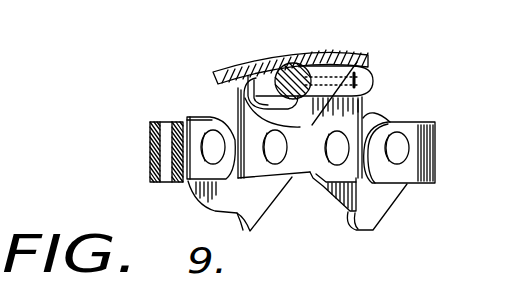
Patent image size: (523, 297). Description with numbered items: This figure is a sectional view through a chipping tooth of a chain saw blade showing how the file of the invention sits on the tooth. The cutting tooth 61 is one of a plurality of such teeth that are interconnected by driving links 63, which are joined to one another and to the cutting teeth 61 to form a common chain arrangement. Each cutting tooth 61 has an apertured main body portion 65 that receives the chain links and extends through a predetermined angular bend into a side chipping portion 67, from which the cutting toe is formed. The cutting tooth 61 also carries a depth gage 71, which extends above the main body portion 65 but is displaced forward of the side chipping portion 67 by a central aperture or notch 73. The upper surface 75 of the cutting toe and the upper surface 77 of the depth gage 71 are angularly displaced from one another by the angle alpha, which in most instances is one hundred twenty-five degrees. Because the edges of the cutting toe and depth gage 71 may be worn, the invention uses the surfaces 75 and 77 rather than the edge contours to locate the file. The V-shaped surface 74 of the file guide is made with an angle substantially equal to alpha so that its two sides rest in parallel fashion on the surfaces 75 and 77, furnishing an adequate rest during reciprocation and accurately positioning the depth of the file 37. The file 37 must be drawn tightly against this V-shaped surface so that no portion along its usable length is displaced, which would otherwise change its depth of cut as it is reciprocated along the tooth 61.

The file 37 is at (338, 60).
The cutting tooth 61 is at (373, 107).
The driving link 63 is at (436, 152).
The main body portion 65 is at (299, 163).
The side chipping portion 67 is at (373, 80).
The depth gage 71 is at (258, 92).
The central aperture or notch 73 is at (280, 104).
The V-shaped surface 74 is at (357, 64).
The upper surface of the cutting toe 75 is at (330, 57).
The upper surface of the depth gage 77 is at (237, 90).